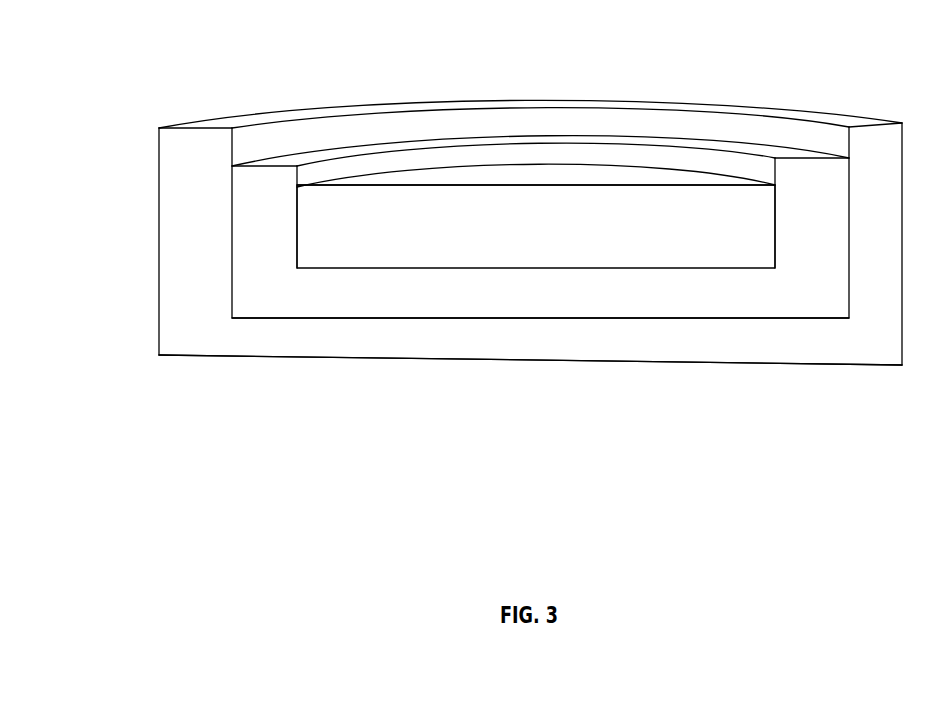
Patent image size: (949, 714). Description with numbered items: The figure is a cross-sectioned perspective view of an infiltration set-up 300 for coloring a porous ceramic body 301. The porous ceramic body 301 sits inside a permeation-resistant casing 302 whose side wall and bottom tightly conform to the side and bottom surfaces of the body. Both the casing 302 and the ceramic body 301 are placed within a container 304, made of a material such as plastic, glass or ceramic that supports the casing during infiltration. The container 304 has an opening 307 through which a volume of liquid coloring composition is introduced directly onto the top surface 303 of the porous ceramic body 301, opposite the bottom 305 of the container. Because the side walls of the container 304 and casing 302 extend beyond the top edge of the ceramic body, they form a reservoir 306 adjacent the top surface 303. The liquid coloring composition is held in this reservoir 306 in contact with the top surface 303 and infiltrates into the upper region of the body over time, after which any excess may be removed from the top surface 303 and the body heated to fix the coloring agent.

The infiltration set-up 300 is at (400, 68).
The porous ceramic body 301 is at (592, 225).
The permeation-resistant casing 302 is at (317, 283).
The top surface 303 is at (415, 183).
The container 304 is at (700, 100).
The bottom 305 is at (380, 358).
The reservoir 306 is at (482, 152).
The opening 307 is at (433, 118).